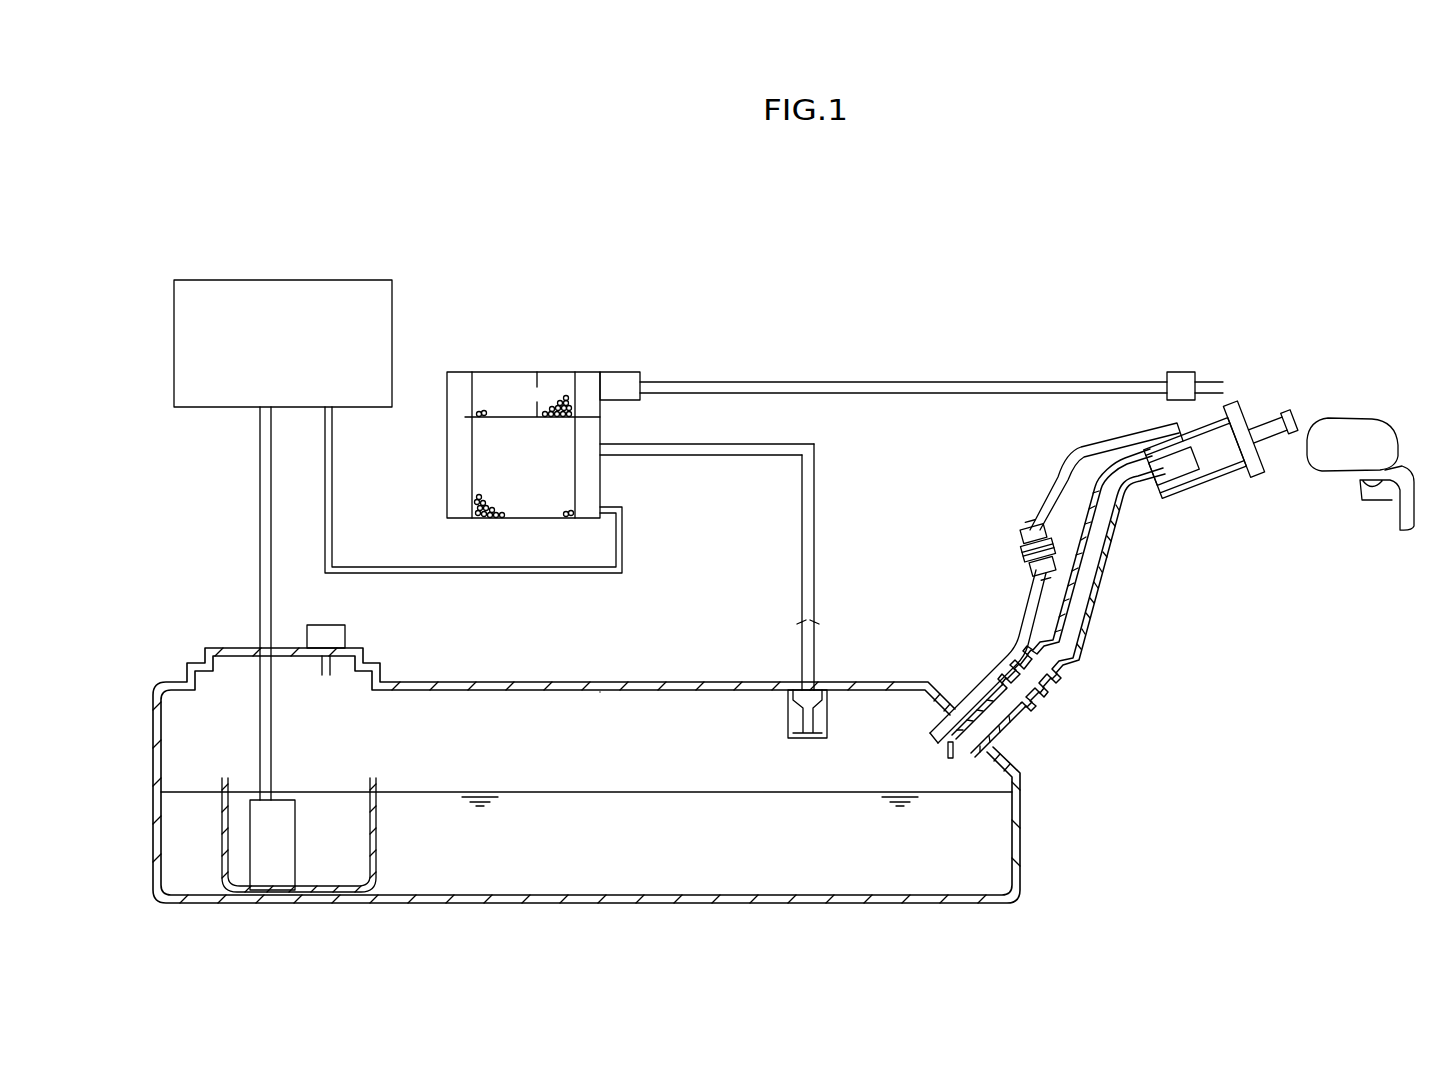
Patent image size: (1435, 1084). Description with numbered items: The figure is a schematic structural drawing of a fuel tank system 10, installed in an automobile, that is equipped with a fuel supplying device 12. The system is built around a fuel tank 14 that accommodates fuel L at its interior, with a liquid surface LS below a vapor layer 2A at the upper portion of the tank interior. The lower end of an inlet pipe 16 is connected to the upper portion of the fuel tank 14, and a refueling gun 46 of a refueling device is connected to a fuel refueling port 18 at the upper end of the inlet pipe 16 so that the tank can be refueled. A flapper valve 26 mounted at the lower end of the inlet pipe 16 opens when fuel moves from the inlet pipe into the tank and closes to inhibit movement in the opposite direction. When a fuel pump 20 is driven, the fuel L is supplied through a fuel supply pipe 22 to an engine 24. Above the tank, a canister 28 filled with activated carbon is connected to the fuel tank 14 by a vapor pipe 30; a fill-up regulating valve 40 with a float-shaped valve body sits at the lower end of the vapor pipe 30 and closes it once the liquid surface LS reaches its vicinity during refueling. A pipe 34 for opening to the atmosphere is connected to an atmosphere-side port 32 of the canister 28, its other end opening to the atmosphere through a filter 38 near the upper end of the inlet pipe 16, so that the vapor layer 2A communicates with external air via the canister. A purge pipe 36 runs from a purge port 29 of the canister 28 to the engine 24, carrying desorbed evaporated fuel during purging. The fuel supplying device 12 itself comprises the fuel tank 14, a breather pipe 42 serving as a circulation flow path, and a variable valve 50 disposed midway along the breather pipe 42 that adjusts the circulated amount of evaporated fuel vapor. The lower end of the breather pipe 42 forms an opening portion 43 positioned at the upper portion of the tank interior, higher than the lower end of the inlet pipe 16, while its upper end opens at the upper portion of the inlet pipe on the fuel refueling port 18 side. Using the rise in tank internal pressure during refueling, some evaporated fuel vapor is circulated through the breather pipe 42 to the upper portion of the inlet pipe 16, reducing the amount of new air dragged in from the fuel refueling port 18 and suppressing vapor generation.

The fuel tank system 10 is at (975, 284).
The fuel supplying device 12 is at (994, 514).
The fuel tank 14 is at (1037, 781).
The inlet pipe 16 is at (1103, 585).
The fuel refueling port 18 is at (1210, 491).
The fuel pump 20 is at (389, 845).
The fuel supply pipe 22 is at (272, 592).
The engine 24 is at (401, 316).
The flapper valve 26 is at (948, 748).
The canister 28 is at (436, 483).
The purge port 29 is at (600, 487).
The vapor pipe 30 is at (815, 562).
The atmosphere-side port 32 is at (587, 372).
The pipe for opening to the atmosphere 34 is at (873, 380).
The purge pipe 36 is at (480, 578).
The filter 38 is at (1176, 372).
The fill-up regulating valve 40 is at (828, 718).
The breather pipe 42 is at (1057, 465).
The opening portion 43 is at (935, 725).
The refueling gun 46 is at (1354, 424).
The variable valve 50 is at (1006, 570).
The vapor layer 2A is at (677, 713).
The fuel L is at (985, 855).
The liquid surface LS is at (575, 791).